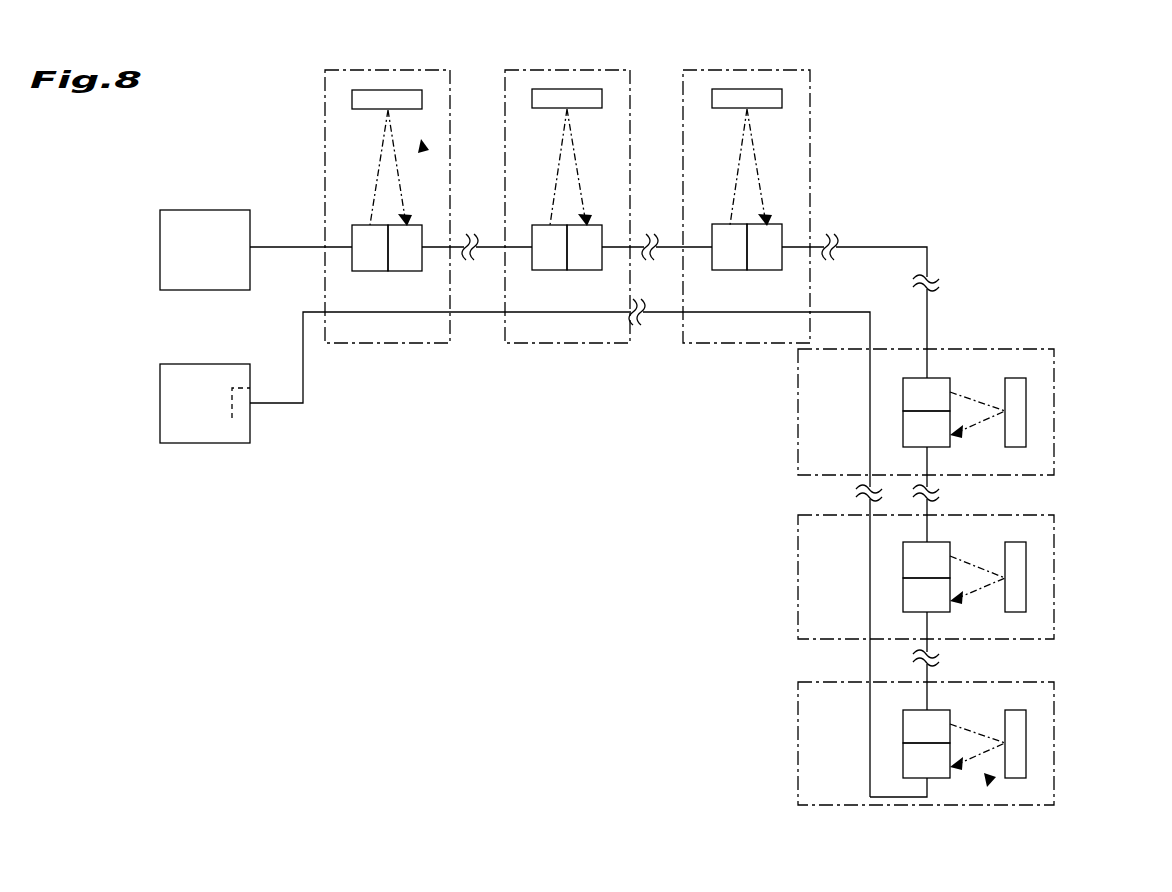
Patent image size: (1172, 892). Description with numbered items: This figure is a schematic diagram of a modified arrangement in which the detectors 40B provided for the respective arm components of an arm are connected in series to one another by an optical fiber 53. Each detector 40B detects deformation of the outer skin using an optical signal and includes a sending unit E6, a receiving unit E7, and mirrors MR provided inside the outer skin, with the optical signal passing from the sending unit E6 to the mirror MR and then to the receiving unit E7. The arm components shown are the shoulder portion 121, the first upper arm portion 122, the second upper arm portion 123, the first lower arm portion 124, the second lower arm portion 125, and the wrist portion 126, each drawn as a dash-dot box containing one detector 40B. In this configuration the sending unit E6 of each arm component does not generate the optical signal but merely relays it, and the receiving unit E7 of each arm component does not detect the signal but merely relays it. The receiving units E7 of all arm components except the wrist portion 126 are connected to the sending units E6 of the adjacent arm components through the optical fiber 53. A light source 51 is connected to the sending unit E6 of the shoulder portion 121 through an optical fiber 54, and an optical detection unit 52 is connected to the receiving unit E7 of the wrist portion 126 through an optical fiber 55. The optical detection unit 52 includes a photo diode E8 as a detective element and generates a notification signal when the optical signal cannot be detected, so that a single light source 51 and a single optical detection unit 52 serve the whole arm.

The light source 51 is at (160, 246).
The optical detection unit 52 is at (160, 401).
The optical fiber 53 is at (488, 247).
The optical fiber 54 is at (288, 247).
The optical fiber 55 is at (278, 406).
The shoulder portion 121 is at (322, 96).
The first upper arm portion 122 is at (570, 70).
The second upper arm portion 123 is at (762, 70).
The first lower arm portion 124 is at (1054, 412).
The second lower arm portion 125 is at (1054, 562).
The wrist portion 126 is at (1054, 695).
The mirror MR is at (384, 101).
The detector 40B is at (422, 145).
The sending unit E6 is at (373, 274).
The receiving unit E7 is at (406, 274).
The photo diode E8 is at (240, 418).